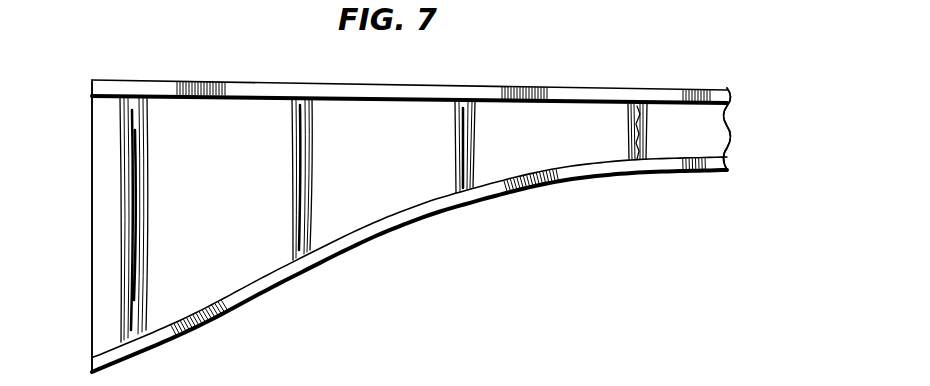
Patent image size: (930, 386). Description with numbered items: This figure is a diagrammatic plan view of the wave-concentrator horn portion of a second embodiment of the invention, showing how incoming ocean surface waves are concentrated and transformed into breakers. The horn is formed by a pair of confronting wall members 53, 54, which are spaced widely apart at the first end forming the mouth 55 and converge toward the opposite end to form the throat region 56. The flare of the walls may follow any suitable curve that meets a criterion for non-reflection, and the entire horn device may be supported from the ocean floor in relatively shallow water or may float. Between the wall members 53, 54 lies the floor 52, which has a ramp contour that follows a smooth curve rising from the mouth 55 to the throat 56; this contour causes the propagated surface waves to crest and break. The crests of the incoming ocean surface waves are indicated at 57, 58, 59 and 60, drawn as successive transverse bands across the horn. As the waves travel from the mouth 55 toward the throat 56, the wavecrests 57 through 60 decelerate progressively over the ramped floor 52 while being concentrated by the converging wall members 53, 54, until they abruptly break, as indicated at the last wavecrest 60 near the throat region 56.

The floor 52 is at (413, 180).
The wall member 53 is at (238, 83).
The wall member 54 is at (303, 257).
The mouth 55 is at (92, 229).
The throat region 56 is at (713, 130).
The wave crest 57 is at (130, 97).
The wave crest 58 is at (300, 97).
The wave crest 59 is at (462, 100).
The wave crest 60 is at (638, 103).